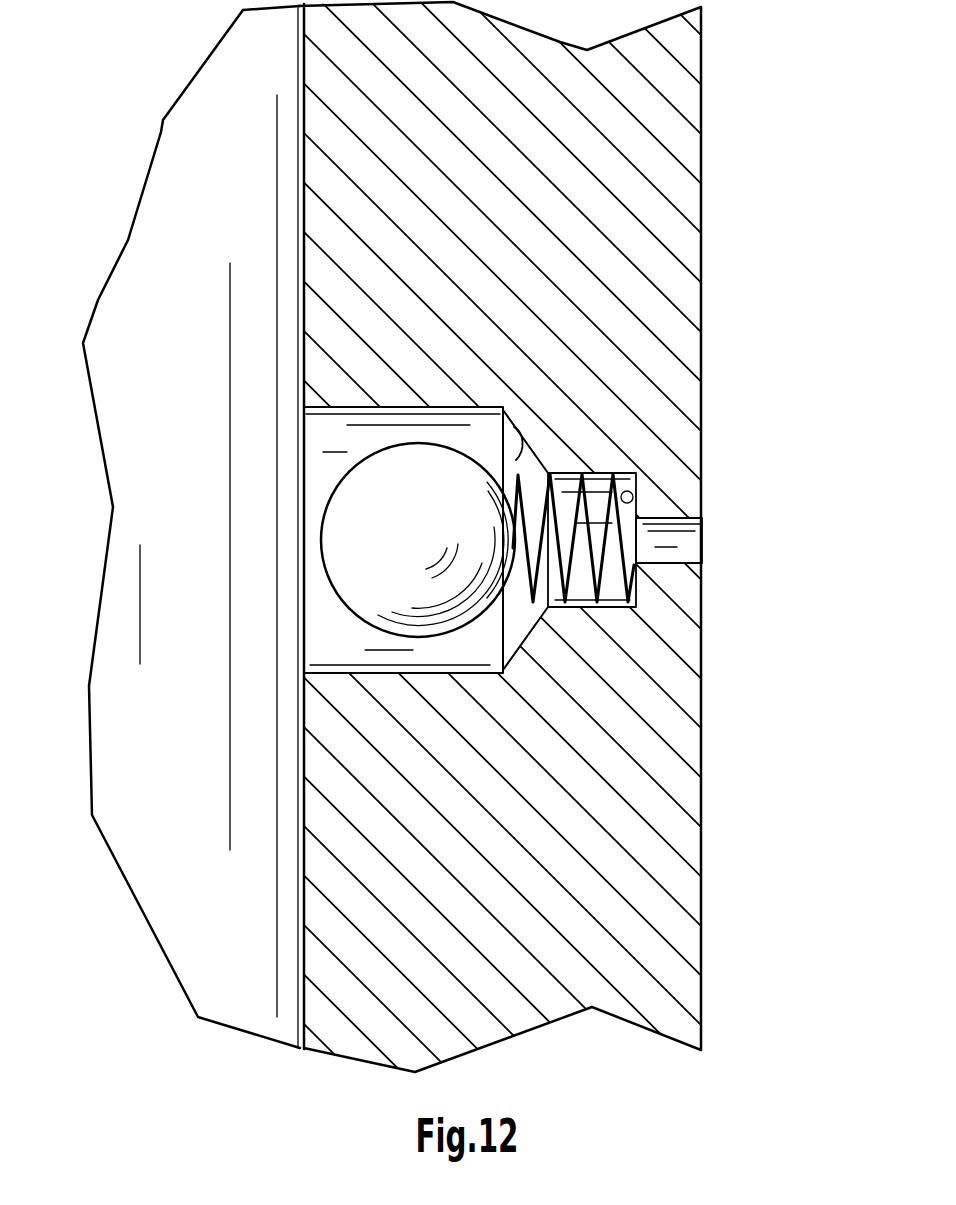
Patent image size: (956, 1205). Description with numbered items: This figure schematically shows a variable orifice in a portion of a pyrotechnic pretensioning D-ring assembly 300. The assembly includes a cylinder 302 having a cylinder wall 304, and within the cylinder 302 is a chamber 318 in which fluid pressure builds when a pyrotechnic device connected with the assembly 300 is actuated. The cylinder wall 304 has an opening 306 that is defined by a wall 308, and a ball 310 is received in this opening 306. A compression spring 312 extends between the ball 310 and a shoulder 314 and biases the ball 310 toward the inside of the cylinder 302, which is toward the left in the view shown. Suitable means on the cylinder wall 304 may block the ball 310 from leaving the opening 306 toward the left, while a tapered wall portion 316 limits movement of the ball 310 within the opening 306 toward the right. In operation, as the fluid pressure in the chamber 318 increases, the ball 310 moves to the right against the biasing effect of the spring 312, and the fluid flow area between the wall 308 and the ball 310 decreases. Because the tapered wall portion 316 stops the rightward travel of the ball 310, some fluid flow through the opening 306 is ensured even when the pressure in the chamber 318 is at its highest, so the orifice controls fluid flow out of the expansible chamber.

The pyrotechnic pretensioning D-ring assembly 300 is at (140, 101).
The cylinder 302 is at (708, 146).
The cylinder wall 304 is at (641, 255).
The opening 306 is at (318, 618).
The wall 308 is at (347, 407).
The ball 310 is at (368, 523).
The compression spring 312 is at (600, 568).
The shoulder 314 is at (636, 494).
The tapered wall portion 316 is at (533, 453).
The chamber 318 is at (166, 731).